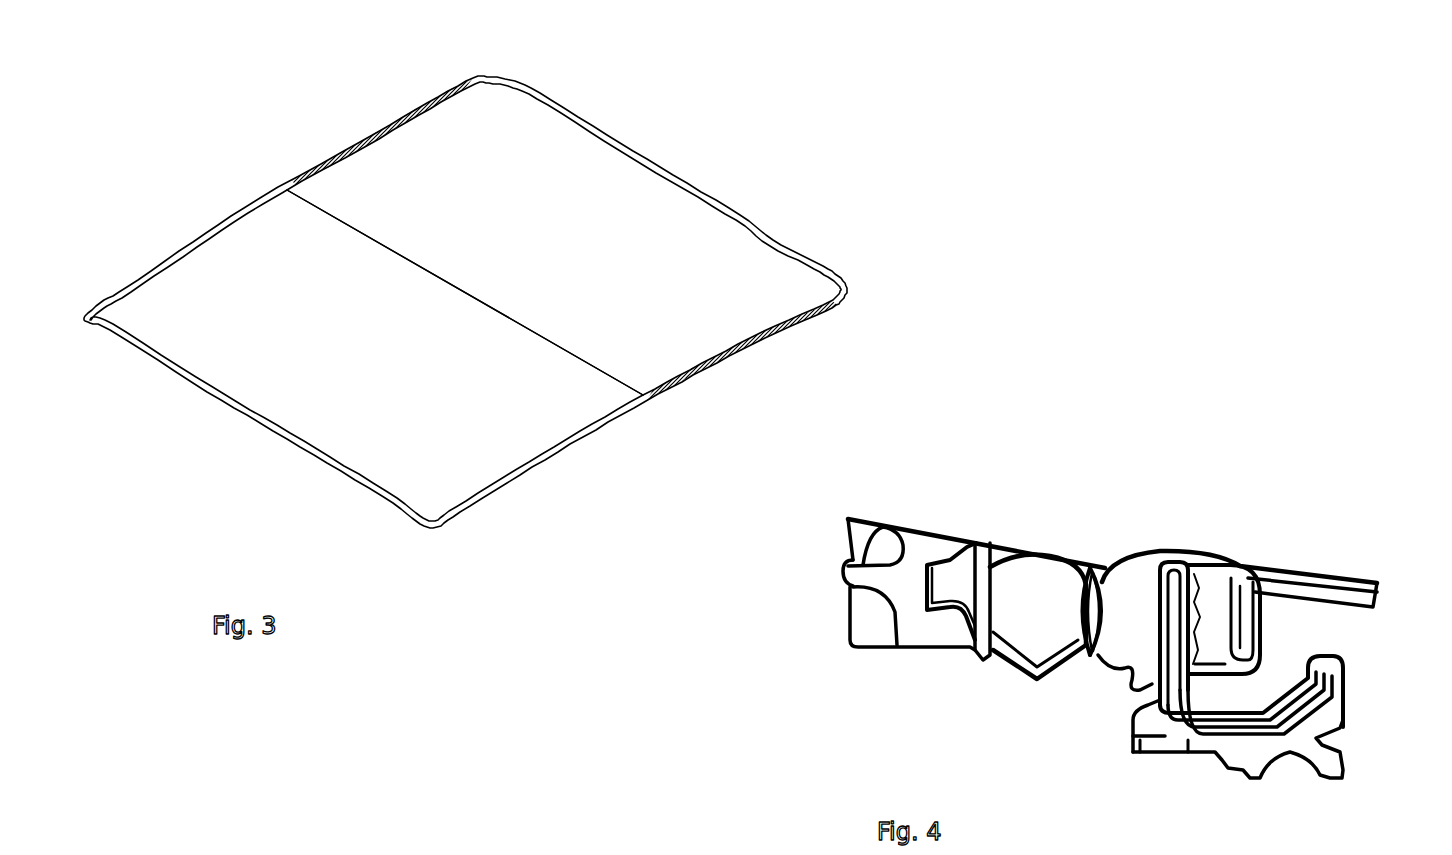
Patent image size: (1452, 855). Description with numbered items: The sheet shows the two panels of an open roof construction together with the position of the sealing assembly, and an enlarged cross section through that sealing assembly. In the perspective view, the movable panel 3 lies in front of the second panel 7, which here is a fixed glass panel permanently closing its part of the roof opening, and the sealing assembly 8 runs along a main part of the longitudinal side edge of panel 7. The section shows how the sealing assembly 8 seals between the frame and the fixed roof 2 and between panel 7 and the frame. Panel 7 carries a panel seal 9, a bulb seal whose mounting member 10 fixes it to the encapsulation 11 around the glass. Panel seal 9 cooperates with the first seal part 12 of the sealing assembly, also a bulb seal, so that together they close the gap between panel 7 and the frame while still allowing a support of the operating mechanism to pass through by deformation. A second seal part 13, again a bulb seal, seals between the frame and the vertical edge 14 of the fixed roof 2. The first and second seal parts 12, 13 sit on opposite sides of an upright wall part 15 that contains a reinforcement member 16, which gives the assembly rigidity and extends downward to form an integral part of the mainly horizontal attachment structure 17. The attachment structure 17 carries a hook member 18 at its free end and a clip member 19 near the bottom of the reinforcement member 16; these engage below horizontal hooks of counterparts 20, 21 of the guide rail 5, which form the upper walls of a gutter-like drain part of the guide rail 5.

In FIG. 4, the fixed roof 2 is at (1382, 590).
In FIG. 3, the panel 3 is at (357, 365).
In FIG. 4, the guide rail 5 is at (1340, 763).
In FIG. 3, the second panel 7 is at (580, 249).
In FIG. 4, the second panel 7 is at (840, 667).
In FIG. 3, the sealing assembly 8 is at (761, 347).
In FIG. 4, the sealing assembly 8 is at (1180, 547).
In FIG. 4, the panel seal 9 is at (1040, 555).
In FIG. 4, the mounting member 10 is at (952, 583).
In FIG. 4, the encapsulation 11 is at (882, 524).
In FIG. 4, the first seal part 12 is at (1133, 570).
In FIG. 4, the second seal part 13 is at (1232, 563).
In FIG. 4, the vertical edge 14 is at (1262, 606).
In FIG. 4, the upright wall part 15 is at (1140, 697).
In FIG. 4, the reinforcement member 16 is at (1178, 688).
In FIG. 4, the attachment structure 17 is at (1343, 690).
In FIG. 4, the hook member 18 is at (1350, 668).
In FIG. 4, the clip member 19 is at (1157, 727).
In FIG. 4, the counterpart 20 is at (1318, 656).
In FIG. 4, the counterpart 21 is at (1163, 717).